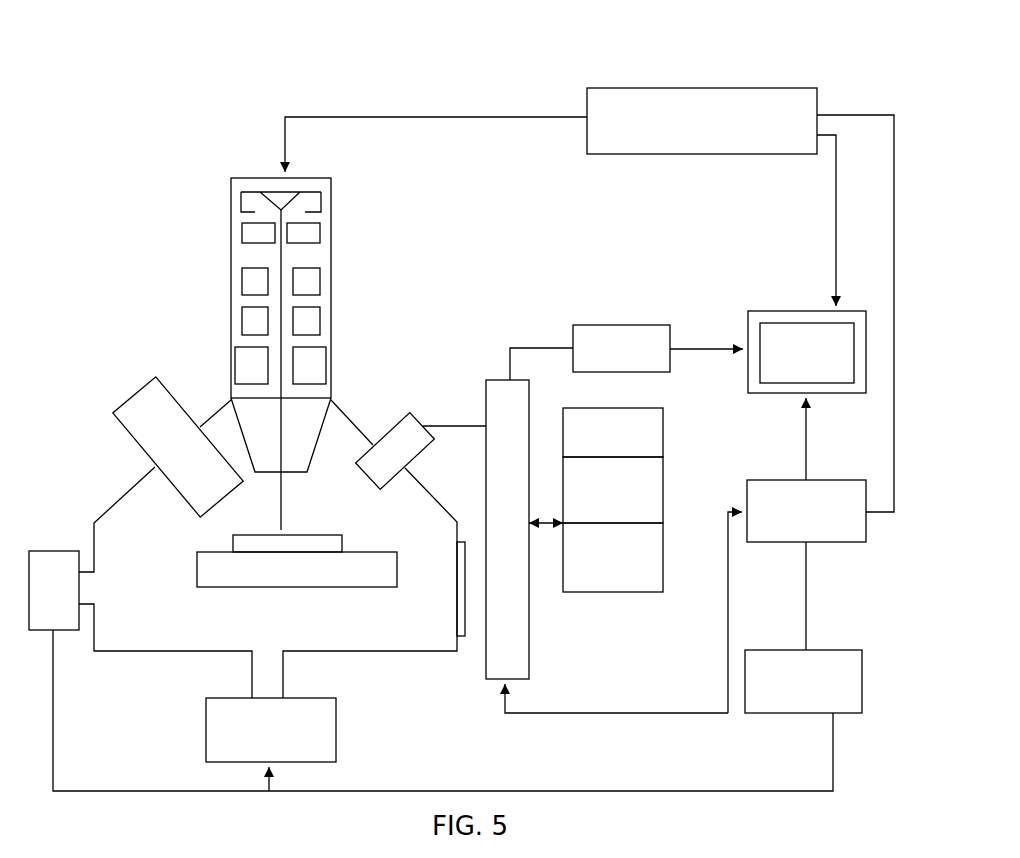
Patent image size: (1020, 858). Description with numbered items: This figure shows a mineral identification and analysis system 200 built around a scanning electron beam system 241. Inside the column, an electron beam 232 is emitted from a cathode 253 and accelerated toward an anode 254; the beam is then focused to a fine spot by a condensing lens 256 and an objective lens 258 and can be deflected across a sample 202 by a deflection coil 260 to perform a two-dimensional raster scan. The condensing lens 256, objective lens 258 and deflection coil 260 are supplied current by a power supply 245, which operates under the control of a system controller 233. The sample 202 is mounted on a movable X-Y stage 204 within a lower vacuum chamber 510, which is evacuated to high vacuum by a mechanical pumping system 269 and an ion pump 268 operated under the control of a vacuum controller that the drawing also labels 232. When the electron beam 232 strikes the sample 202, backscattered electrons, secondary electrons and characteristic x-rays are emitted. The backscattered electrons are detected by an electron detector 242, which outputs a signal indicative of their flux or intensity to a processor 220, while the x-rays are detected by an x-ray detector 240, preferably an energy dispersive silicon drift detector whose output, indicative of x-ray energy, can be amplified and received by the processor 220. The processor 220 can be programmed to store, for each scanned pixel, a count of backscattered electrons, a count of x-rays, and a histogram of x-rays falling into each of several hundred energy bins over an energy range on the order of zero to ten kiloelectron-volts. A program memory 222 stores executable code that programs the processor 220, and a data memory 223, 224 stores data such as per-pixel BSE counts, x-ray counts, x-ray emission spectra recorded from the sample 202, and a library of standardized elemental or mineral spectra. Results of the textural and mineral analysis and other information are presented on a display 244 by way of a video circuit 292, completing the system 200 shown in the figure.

The mineral identification and analysis system 200 is at (188, 99).
The scanning electron beam system 241 is at (320, 166).
The cathode 253 is at (282, 190).
The anode 254 is at (243, 228).
The condensing lens 256 is at (243, 272).
The deflection coil 260 is at (243, 309).
The objective lens 258 is at (243, 353).
The electron beam 232 is at (281, 506).
The electron detector 242 is at (136, 393).
The x-ray detector 240 is at (421, 454).
The sample 202 is at (243, 547).
The movable X-Y stage 204 is at (375, 572).
The ion pump 268 is at (54, 590).
The vacuum chamber 510 is at (140, 640).
The mechanical pumping system 269 is at (206, 727).
The processor 220 is at (500, 380).
The video circuit 292 is at (645, 325).
The display 244 is at (807, 352).
The program memory 222 is at (657, 428).
The data memory 223 is at (657, 474).
The data memory 224 is at (657, 544).
The system controller 233 is at (826, 480).
The power supply 245 is at (775, 88).